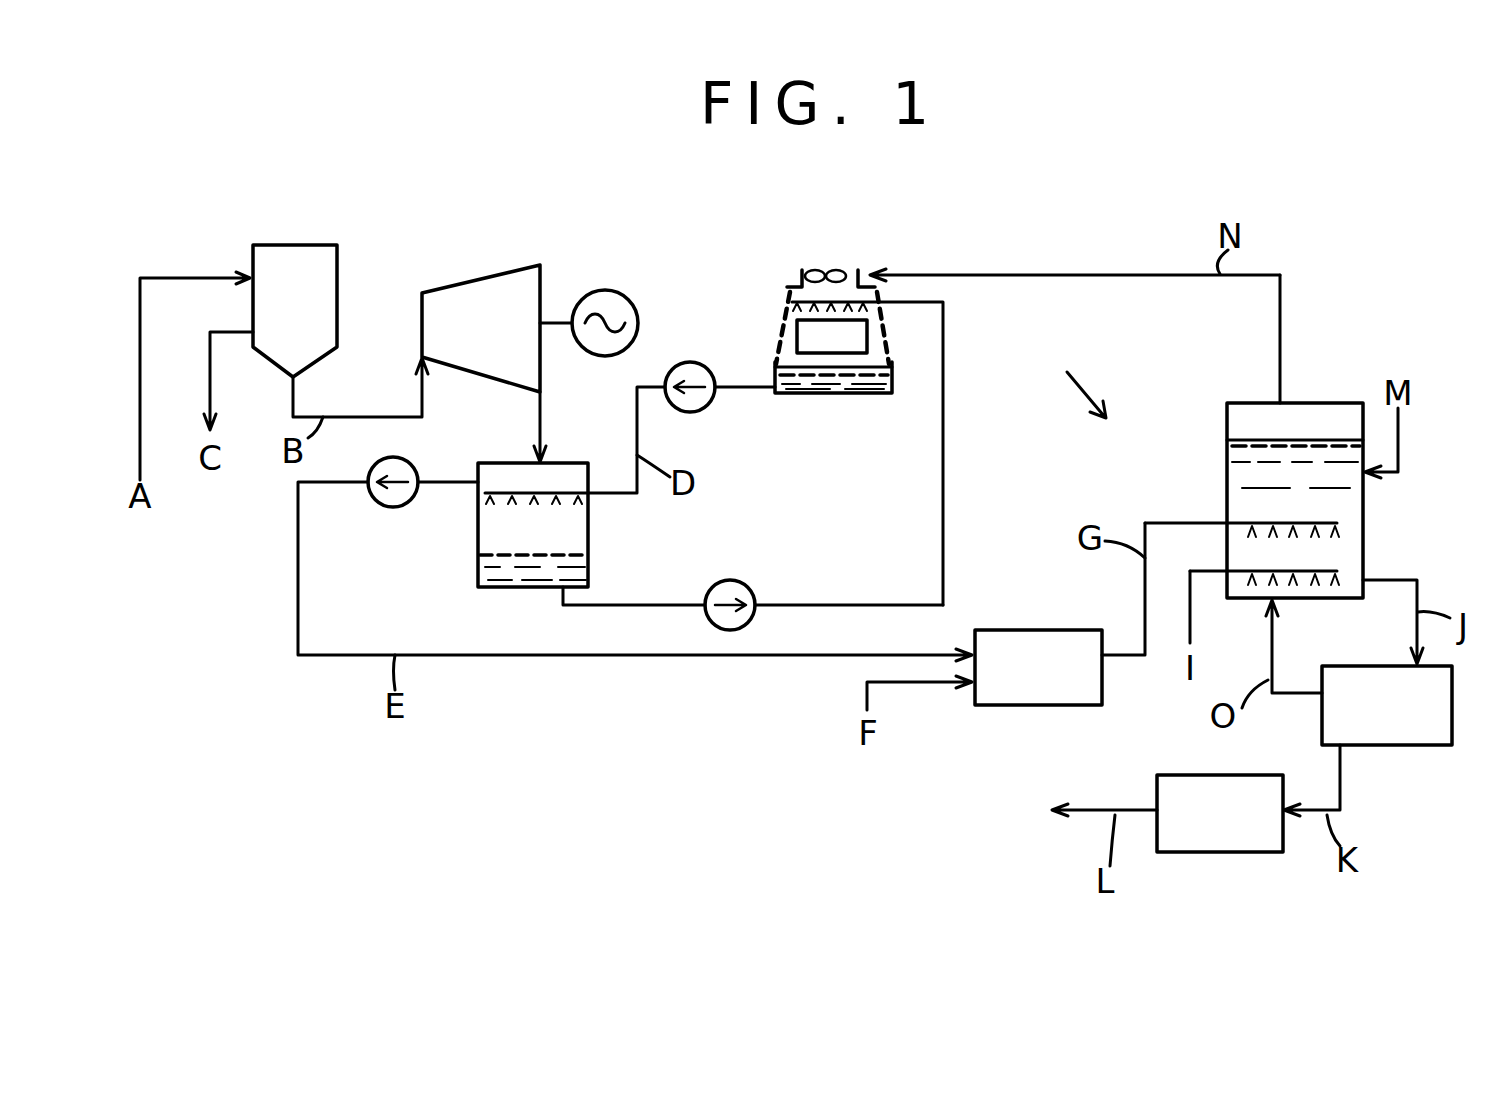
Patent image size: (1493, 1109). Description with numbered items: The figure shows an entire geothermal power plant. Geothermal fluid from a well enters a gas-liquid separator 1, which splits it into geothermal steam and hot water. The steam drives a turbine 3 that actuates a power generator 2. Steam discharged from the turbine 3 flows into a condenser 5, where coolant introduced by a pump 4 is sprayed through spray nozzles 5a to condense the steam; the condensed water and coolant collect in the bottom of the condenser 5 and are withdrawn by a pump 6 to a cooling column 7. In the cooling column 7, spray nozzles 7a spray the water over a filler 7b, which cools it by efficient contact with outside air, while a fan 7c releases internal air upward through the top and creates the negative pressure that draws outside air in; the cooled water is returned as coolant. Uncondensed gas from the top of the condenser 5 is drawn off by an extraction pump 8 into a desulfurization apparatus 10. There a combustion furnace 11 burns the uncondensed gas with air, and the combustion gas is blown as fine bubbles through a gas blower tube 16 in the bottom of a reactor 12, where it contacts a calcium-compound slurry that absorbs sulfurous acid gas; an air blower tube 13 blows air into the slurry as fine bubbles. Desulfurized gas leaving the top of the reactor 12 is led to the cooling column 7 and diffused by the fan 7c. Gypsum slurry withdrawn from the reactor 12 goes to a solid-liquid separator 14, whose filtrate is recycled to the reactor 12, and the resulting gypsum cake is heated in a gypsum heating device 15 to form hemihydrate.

The gas-liquid separator 1 is at (290, 245).
The power generator 2 is at (605, 290).
The turbine 3 is at (487, 279).
The pump 4 is at (702, 410).
The condenser 5 is at (556, 500).
The spray nozzles 5a is at (490, 495).
The pump 6 is at (742, 582).
The cooling column 7 is at (815, 408).
The spray nozzles 7a is at (800, 290).
The filler 7b is at (797, 330).
The fan 7c is at (845, 270).
The extraction pump 8 is at (393, 507).
The desulfurization apparatus 10 is at (1069, 371).
The combustion furnace 11 is at (993, 630).
The reactor 12 is at (1252, 440).
The air blower tube 13 is at (1320, 570).
The solid-liquid separator 14 is at (1405, 746).
The gypsum heating device 15 is at (1252, 853).
The gas blower tube 16 is at (1265, 523).